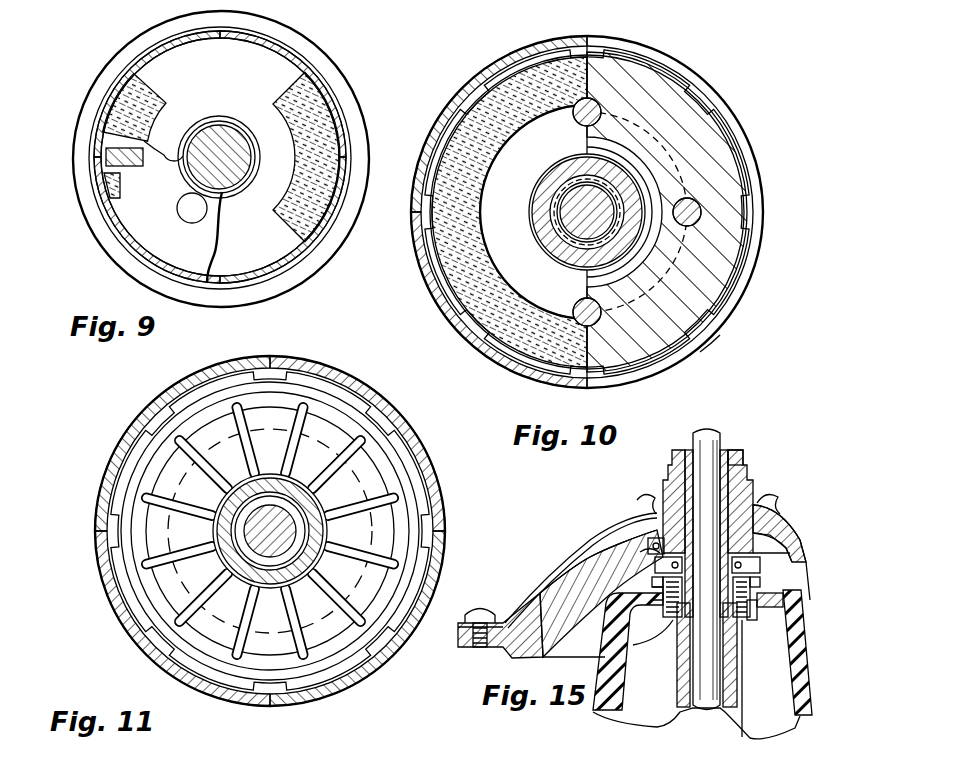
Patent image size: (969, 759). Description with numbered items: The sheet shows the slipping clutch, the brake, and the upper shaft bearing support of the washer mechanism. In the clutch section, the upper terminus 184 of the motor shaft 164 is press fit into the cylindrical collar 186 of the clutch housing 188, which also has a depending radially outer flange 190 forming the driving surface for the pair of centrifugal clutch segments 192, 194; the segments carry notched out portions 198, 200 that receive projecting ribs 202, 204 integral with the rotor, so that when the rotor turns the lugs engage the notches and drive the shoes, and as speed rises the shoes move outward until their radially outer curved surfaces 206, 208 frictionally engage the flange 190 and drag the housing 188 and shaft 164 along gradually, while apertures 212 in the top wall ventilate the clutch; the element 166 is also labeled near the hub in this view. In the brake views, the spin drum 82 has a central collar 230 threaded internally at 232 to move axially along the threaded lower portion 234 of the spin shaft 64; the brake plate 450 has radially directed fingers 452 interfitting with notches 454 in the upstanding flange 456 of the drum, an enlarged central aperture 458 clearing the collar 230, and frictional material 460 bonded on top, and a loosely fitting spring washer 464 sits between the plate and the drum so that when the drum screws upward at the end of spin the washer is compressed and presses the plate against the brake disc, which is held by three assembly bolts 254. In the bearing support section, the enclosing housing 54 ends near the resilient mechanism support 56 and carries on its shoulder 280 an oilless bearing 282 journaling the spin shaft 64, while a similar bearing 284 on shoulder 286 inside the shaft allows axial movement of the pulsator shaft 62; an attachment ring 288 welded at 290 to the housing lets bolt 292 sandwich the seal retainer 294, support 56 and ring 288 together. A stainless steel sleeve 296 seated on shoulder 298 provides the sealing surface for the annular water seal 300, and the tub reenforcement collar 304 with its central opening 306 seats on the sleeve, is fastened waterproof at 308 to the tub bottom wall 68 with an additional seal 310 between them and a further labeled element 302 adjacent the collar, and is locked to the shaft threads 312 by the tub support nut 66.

In FIG. 9, the motor shaft 164 is at (251, 261).
In FIG. 9, the hub ring 166 is at (211, 116).
In FIG. 9, the upper terminus 184 is at (228, 188).
In FIG. 9, the cylindrical collar 186 is at (220, 126).
In FIG. 9, the clutch housing 188 is at (131, 224).
In FIG. 9, the radially outer flange 190 is at (126, 79).
In FIG. 9, the clutch segment 192 is at (121, 108).
In FIG. 9, the clutch segment 194 is at (308, 108).
In FIG. 9, the notched out portion 198 is at (108, 143).
In FIG. 9, the notched out portion 200 is at (355, 138).
In FIG. 9, the projecting rib 202 is at (115, 171).
In FIG. 9, the projecting rib 204 is at (345, 181).
In FIG. 9, the radially outer curved surface 206 is at (101, 124).
In FIG. 9, the radially outer curved surface 208 is at (335, 201).
In FIG. 9, the aperture 212 is at (183, 221).
In FIG. 10, the assembly bolt 254 is at (597, 104).
In FIG. 10, the central aperture 458 is at (548, 172).
In FIG. 11, the central aperture 458 is at (230, 553).
In FIG. 10, the central collar 230 is at (543, 190).
In FIG. 11, the central collar 230 is at (293, 570).
In FIG. 10, the frictional material 460 is at (477, 255).
In FIG. 10, the pulsator shaft 62 is at (573, 218).
In FIG. 11, the pulsator shaft 62 is at (260, 540).
In FIG. 15, the pulsator shaft 62 is at (710, 678).
In FIG. 10, the internal threads 232 is at (558, 238).
In FIG. 10, the upstanding flange 456 is at (428, 276).
In FIG. 10, the notch 454 is at (470, 322).
In FIG. 10, the radially directed finger 452 is at (488, 330).
In FIG. 10, the brake plate 450 is at (560, 305).
In FIG. 11, the brake plate 450 is at (125, 585).
In FIG. 10, the spin drum 82 is at (702, 352).
In FIG. 11, the spring washer 464 is at (410, 504).
In FIG. 11, the threaded lower portion 234 is at (278, 567).
In FIG. 15, the tub support nut 66 is at (673, 468).
In FIG. 15, the bearing 284 is at (720, 452).
In FIG. 15, the threads 312 is at (743, 456).
In FIG. 15, the shoulder 286 is at (752, 483).
In FIG. 15, the shoulder 298 is at (768, 507).
In FIG. 15, the seal 310 is at (650, 500).
In FIG. 15, the stainless steel sleeve 296 is at (647, 547).
In FIG. 15, the arm plate 302 is at (663, 555).
In FIG. 15, the central opening 306 is at (640, 552).
In FIG. 15, the bottom wall 68 is at (577, 547).
In FIG. 15, the tub reenforcement collar 304 is at (543, 607).
In FIG. 15, the seal retainer 294 is at (655, 580).
In FIG. 15, the annular water seal 300 is at (755, 583).
In FIG. 15, the waterproof fastening 308 is at (465, 613).
In FIG. 15, the bolt 292 is at (608, 613).
In FIG. 15, the resilient mechanism support 56 is at (605, 637).
In FIG. 15, the attachment ring 288 is at (658, 613).
In FIG. 15, the oilless bearing 282 is at (752, 618).
In FIG. 15, the shoulder 280 is at (739, 658).
In FIG. 15, the weld 290 is at (673, 630).
In FIG. 15, the spin shaft 64 is at (730, 697).
In FIG. 15, the enclosing housing 54 is at (743, 700).